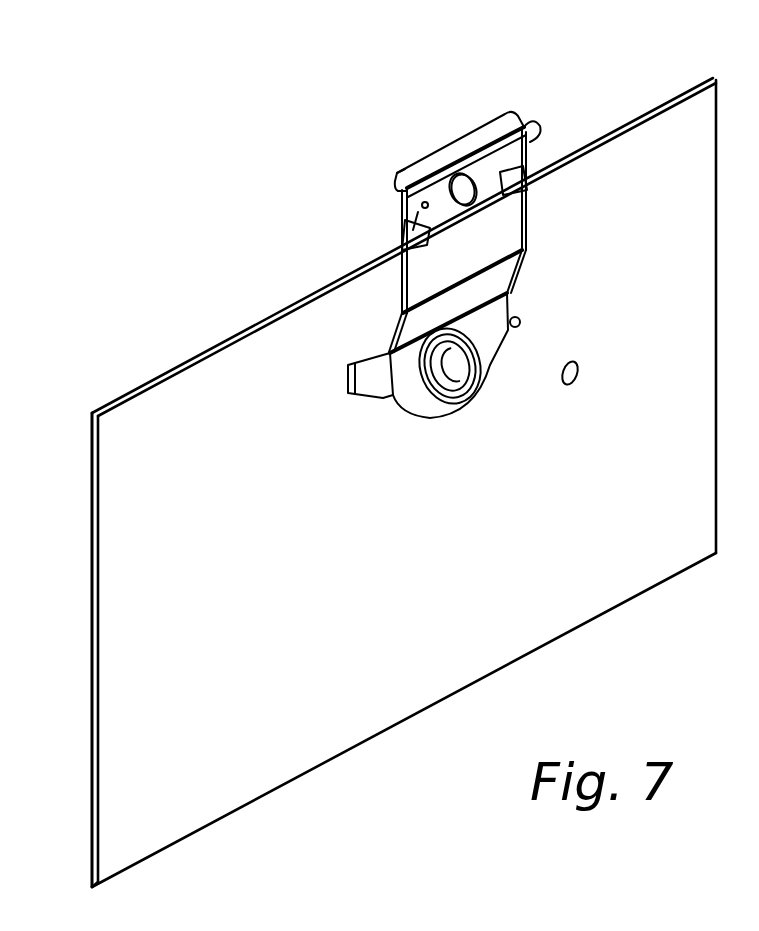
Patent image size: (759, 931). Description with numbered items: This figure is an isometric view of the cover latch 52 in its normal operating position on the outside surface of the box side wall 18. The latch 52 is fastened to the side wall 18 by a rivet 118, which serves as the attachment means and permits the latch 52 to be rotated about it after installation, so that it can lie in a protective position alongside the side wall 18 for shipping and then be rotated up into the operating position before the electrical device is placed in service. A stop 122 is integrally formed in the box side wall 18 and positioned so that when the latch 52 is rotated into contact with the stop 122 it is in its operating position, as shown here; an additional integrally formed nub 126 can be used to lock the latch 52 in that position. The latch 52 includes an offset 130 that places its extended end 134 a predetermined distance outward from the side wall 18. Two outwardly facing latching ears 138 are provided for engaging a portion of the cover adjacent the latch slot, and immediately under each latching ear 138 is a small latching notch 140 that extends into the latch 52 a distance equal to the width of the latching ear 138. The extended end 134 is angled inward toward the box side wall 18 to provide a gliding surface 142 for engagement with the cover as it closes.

The box side wall 18 is at (272, 639).
The latch 52 is at (485, 249).
The rivet 118 is at (455, 367).
The stop 122 is at (373, 375).
The nub 126 is at (521, 322).
The offset 130 is at (392, 330).
The extended end 134 is at (476, 120).
The latching ear 138 is at (533, 128).
The latching notch 140 is at (400, 248).
The gliding surface 142 is at (437, 153).